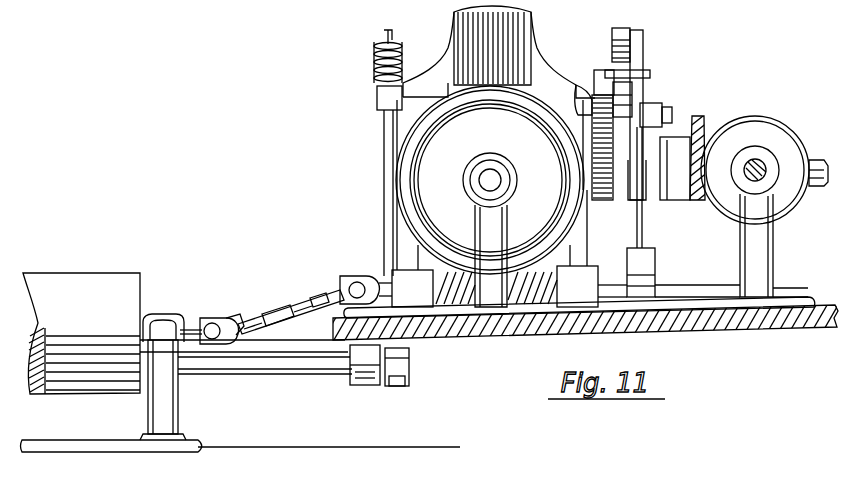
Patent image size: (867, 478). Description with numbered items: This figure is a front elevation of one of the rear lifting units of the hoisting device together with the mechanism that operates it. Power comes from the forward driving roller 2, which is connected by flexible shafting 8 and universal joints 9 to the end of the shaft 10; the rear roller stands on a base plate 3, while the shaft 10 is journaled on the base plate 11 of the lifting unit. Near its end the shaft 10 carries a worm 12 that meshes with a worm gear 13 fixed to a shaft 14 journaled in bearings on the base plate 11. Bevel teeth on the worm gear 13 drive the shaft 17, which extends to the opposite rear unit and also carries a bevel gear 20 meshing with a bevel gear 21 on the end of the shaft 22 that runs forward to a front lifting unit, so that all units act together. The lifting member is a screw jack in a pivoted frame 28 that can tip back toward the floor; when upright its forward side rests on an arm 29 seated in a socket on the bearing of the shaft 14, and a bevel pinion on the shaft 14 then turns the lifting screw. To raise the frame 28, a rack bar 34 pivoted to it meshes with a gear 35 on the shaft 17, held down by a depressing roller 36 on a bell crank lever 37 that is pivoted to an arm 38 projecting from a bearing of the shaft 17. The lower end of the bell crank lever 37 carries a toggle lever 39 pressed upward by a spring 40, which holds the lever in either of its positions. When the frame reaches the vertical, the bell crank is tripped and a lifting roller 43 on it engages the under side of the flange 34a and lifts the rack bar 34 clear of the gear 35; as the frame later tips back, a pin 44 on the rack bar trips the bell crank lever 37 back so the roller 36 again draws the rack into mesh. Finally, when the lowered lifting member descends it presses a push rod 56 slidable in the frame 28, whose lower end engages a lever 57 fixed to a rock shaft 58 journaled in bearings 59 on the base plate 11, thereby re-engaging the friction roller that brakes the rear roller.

The forward roller 2 is at (81, 333).
The base plate 3 is at (112, 444).
The flexible shafting 8 is at (310, 297).
The universal joint 9 is at (230, 315).
The shaft 10 is at (812, 295).
The base plate 11 is at (700, 303).
The worm 12 is at (528, 300).
The worm gear 13 is at (430, 156).
The shaft 14 is at (486, 182).
The shaft 17 is at (818, 158).
The bevel gear 20 is at (705, 137).
The bevel gear 21 is at (772, 130).
The shaft 22 is at (765, 205).
The pivoted frame 28 is at (512, 38).
The arm 29 is at (500, 70).
The rack bar 34 is at (585, 100).
The flange 34a is at (612, 76).
The gear 35 is at (600, 142).
The depressing roller 36 is at (623, 32).
The bell crank lever 37 is at (644, 62).
The arm 38 is at (668, 116).
The toggle lever 39 is at (643, 226).
The spring 40 is at (645, 270).
The lifting roller 43 is at (625, 100).
The pin 44 is at (650, 74).
The push rod 56 is at (382, 128).
The lever 57 is at (400, 388).
The rock shaft 58 is at (250, 376).
The bearing 59 is at (362, 387).